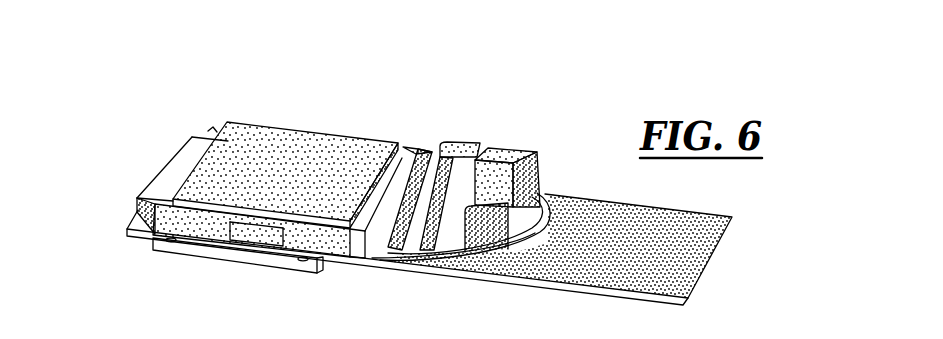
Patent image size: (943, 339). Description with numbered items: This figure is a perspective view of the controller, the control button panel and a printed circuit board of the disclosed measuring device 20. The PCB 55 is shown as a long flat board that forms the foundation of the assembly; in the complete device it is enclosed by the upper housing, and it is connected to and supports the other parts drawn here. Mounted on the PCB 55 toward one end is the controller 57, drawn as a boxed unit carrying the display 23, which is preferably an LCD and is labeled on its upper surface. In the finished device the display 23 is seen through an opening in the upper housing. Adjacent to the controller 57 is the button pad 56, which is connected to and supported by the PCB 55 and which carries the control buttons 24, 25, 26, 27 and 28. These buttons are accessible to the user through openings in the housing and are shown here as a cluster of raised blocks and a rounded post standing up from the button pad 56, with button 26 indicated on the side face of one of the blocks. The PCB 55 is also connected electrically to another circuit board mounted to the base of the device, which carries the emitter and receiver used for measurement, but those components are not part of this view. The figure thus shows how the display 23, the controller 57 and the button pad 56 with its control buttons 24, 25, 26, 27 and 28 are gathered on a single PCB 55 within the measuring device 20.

The measuring device 20 is at (86, 288).
The display 23 is at (283, 181).
The control button 24 is at (425, 200).
The control button 25 is at (457, 143).
The control button 26 is at (530, 160).
The control button 27 is at (473, 215).
The control button 28 is at (500, 148).
The PCB 55 is at (722, 259).
The button pad 56 is at (503, 270).
The controller 57 is at (122, 212).